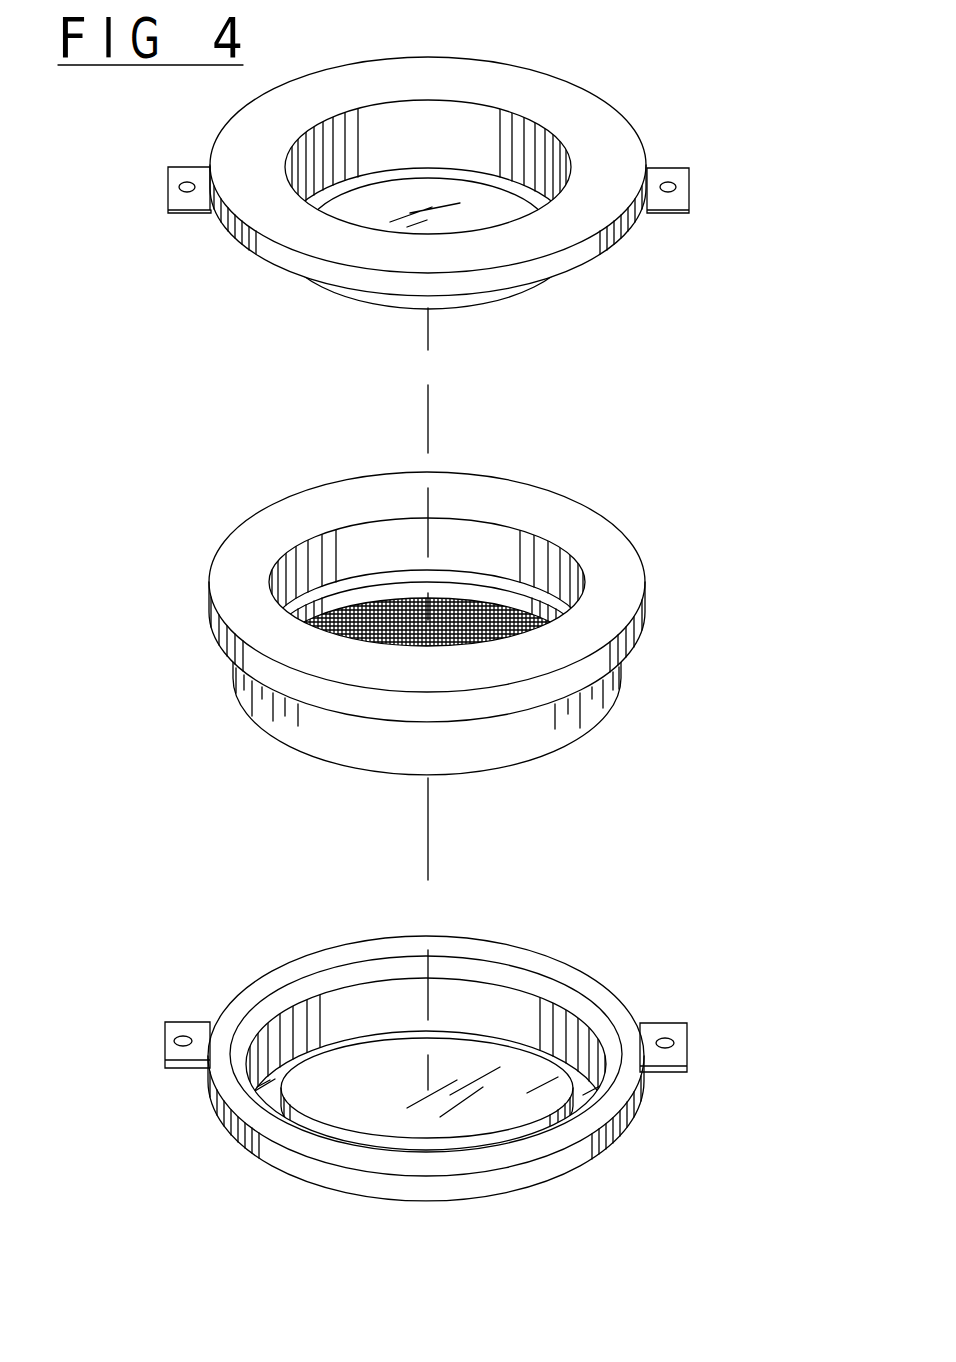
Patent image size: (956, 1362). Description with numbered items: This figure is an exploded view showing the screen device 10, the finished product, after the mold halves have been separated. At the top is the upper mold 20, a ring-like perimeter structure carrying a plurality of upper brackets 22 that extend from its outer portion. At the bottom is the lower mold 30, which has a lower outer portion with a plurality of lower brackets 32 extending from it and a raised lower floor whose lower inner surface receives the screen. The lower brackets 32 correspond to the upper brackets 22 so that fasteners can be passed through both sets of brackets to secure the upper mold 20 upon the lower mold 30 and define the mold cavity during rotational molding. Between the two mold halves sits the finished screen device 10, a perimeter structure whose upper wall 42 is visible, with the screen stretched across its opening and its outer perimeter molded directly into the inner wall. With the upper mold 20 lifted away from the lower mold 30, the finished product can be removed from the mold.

The screen device 10 is at (678, 128).
The upper mold 20 is at (285, 262).
The upper brackets 22 is at (193, 203).
The upper wall 42 is at (250, 620).
The lower mold 30 is at (593, 970).
The lower brackets 32 is at (180, 1053).